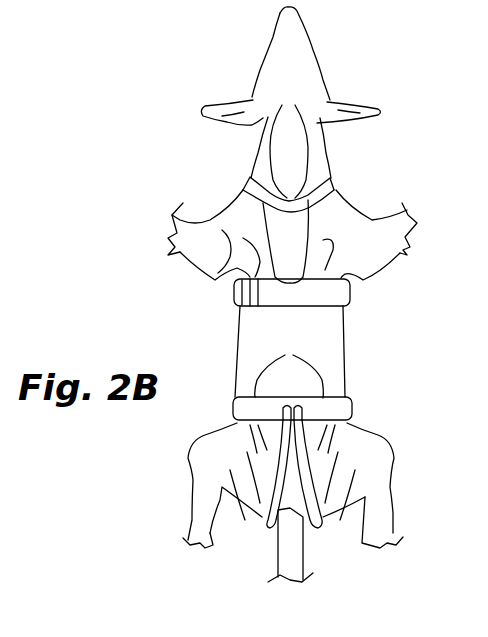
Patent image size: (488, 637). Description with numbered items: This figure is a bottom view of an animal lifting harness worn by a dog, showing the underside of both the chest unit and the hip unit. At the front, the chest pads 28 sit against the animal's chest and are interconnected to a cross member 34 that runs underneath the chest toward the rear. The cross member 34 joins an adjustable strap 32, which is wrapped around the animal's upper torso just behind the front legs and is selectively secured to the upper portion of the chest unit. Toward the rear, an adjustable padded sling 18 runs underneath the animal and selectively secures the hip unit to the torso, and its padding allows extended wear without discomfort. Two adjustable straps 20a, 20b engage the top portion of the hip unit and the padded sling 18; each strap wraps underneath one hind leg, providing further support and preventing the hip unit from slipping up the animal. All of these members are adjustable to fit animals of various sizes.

The chest pads 28 is at (242, 189).
The cross member 34 is at (298, 230).
The adjustable strap 32 is at (340, 291).
The padded sling 18 is at (330, 403).
The adjustable strap 20a is at (264, 528).
The adjustable strap 20b is at (324, 528).